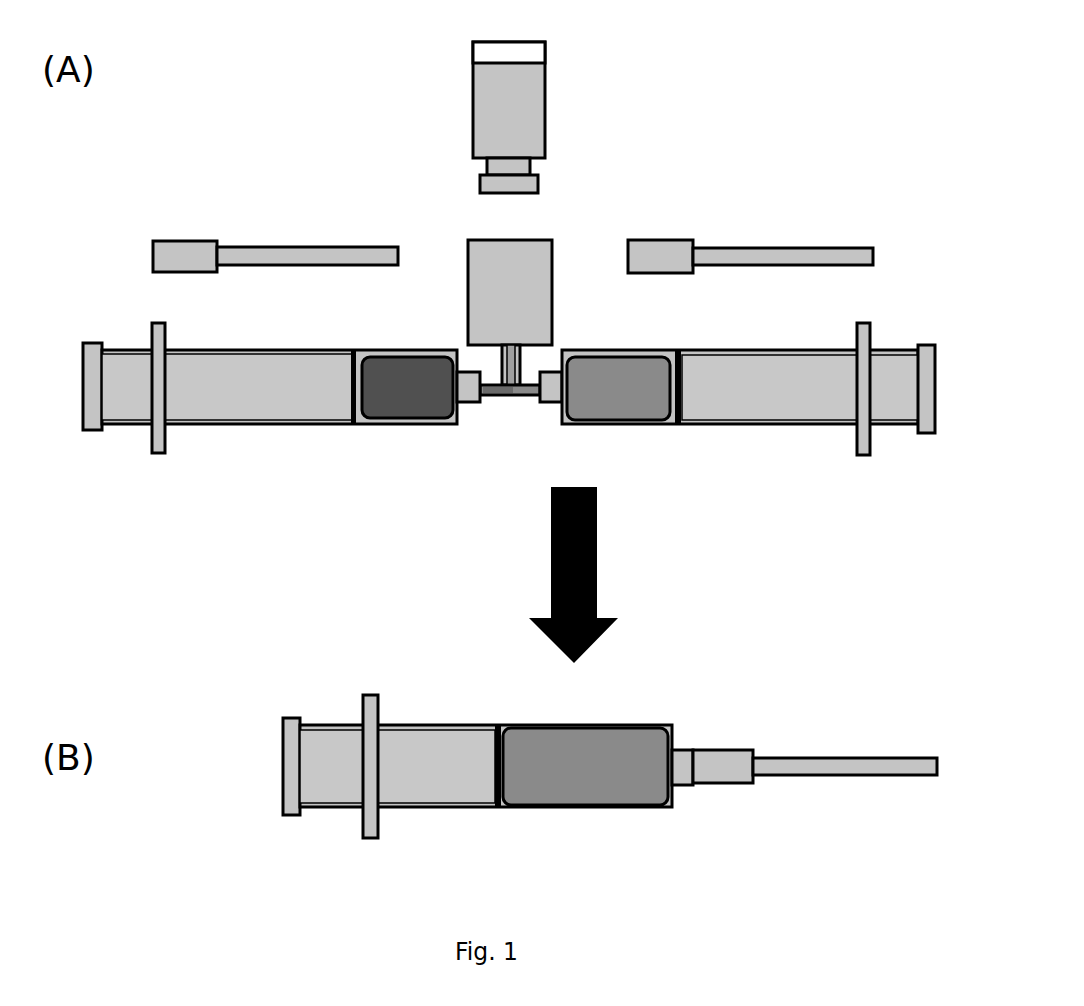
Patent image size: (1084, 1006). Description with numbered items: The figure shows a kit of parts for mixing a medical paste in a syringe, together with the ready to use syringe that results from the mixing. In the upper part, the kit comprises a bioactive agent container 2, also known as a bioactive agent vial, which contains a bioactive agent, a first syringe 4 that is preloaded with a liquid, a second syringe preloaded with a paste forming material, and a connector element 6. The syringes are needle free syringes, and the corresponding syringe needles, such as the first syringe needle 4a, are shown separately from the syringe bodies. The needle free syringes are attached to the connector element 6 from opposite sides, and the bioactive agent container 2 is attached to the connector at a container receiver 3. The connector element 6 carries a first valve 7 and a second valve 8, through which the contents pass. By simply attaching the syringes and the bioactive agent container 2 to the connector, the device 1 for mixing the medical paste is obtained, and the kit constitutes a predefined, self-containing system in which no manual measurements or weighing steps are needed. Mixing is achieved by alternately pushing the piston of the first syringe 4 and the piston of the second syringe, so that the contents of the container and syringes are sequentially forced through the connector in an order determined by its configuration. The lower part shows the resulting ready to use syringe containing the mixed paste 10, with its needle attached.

The device 1 is at (247, 156).
The bioactive agent container 2 is at (561, 115).
The container receiver 3 is at (556, 235).
The first syringe 4 is at (127, 338).
The first syringe needle 4a is at (146, 255).
The connector element 6 is at (512, 404).
The first valve 7 is at (491, 404).
The second valve 8 is at (522, 368).
The paste 10 is at (593, 749).